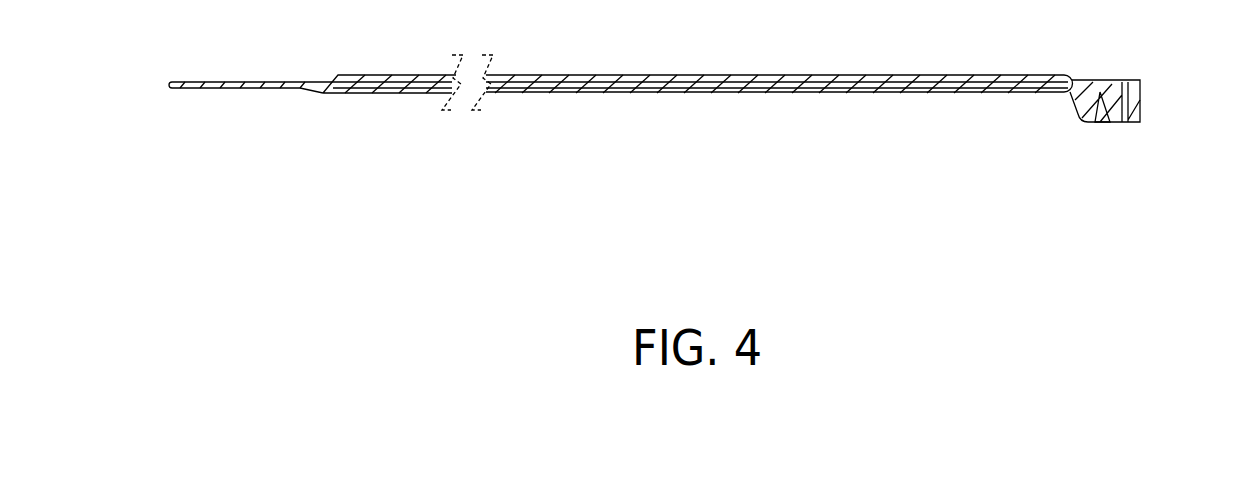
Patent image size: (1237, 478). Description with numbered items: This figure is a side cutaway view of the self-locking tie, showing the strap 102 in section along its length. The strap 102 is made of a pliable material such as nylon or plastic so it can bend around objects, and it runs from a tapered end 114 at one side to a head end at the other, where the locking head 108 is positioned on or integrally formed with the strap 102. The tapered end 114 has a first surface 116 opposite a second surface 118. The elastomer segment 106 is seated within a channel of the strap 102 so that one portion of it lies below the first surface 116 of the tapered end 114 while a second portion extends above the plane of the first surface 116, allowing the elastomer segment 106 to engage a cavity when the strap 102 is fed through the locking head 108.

The strap 102 is at (758, 93).
The elastomer segment 106 is at (783, 78).
The locking head 108 is at (1138, 90).
The tapered end 114 is at (203, 90).
The first surface 116 is at (285, 82).
The second surface 118 is at (540, 95).